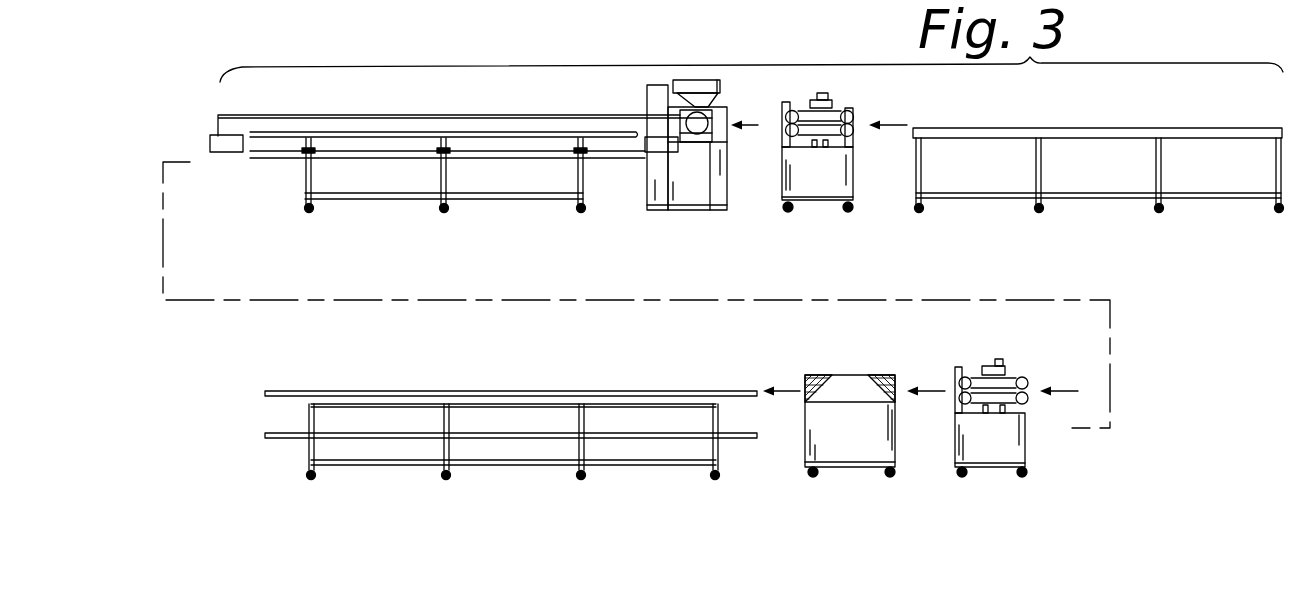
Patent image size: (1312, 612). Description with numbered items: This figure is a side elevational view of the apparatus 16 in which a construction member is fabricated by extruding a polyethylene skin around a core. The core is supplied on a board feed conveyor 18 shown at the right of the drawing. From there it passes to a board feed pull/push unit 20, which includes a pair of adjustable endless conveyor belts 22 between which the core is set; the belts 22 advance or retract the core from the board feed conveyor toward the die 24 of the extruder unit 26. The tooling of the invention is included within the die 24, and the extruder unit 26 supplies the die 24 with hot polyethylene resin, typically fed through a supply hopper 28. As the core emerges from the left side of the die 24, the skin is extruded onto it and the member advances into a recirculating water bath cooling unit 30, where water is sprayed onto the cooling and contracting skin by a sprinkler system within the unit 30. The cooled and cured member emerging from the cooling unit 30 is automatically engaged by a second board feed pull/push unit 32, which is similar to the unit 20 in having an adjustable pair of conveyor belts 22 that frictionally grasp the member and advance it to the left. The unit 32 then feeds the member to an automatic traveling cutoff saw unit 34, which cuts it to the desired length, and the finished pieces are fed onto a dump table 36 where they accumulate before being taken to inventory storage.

The apparatus 16 is at (862, 48).
The board feed conveyor 18 is at (1054, 123).
The board feed pull/push unit 20 is at (825, 184).
The conveyor belts 22 is at (852, 114).
The die 24 is at (708, 122).
The extruder unit 26 is at (718, 166).
The supply hopper 28 is at (719, 88).
The recirculating water bath cooling unit 30 is at (521, 104).
The board feed pull/push unit 32 is at (1018, 443).
The automatic traveling cutoff saw unit 34 is at (849, 375).
The dump table 36 is at (563, 383).